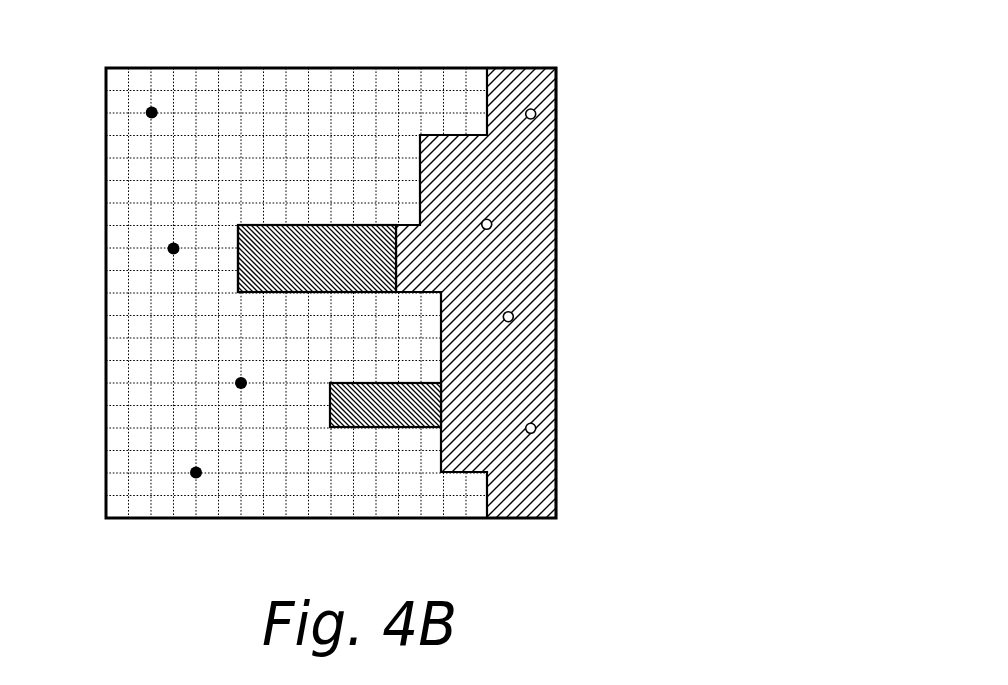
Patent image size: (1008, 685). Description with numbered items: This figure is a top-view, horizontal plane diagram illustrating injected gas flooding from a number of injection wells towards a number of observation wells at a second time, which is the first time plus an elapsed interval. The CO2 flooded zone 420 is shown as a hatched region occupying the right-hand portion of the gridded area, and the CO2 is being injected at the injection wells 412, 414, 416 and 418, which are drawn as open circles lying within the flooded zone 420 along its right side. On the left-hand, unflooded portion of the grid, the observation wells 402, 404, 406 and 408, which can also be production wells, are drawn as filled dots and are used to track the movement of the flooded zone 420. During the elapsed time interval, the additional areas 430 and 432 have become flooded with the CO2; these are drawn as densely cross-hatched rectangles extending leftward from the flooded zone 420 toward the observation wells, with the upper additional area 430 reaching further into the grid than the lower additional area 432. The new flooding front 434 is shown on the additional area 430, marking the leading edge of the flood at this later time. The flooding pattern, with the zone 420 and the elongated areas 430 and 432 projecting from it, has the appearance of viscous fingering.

The observation well 402 is at (163, 97).
The observation well 404 is at (163, 238).
The observation well 406 is at (230, 377).
The observation well 408 is at (183, 469).
The injection well 412 is at (531, 98).
The injection well 414 is at (502, 224).
The injection well 416 is at (523, 318).
The injection well 418 is at (545, 430).
The CO2 flooded zone 420 is at (530, 358).
The additional flooded area 430 is at (326, 240).
The additional flooded area 432 is at (396, 420).
The new flooding front 434 is at (238, 259).